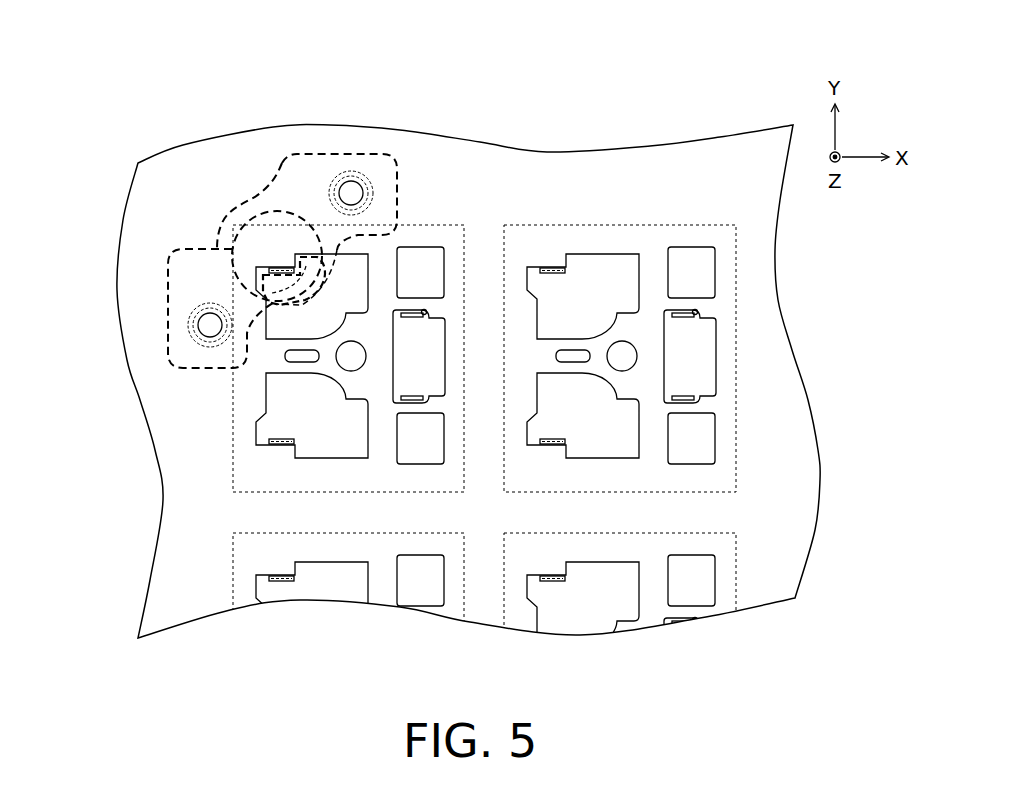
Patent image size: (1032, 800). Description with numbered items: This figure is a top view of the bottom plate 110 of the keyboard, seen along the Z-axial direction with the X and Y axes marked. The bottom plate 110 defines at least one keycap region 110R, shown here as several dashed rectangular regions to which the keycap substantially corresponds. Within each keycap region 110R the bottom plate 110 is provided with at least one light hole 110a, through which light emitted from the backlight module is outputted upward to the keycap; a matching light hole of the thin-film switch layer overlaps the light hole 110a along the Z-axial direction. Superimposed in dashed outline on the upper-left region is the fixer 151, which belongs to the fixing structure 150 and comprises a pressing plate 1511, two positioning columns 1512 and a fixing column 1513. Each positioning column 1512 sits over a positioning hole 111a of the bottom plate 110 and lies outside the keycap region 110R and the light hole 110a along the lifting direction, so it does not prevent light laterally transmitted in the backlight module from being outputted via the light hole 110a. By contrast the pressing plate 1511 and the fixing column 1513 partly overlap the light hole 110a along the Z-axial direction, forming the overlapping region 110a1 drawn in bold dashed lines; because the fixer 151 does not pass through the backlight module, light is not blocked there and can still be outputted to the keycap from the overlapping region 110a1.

The bottom plate 110 is at (576, 164).
The light hole 110a is at (365, 277).
The overlapping region 110a1 is at (273, 300).
The keycap region 110R is at (436, 225).
The positioning hole 111a is at (351, 181).
The fixing member 150 is at (150, 297).
The fixer 151 is at (320, 58).
The pressing plate 1511 is at (330, 230).
The positioning column 1512 is at (250, 218).
The fixing column 1513 is at (217, 247).